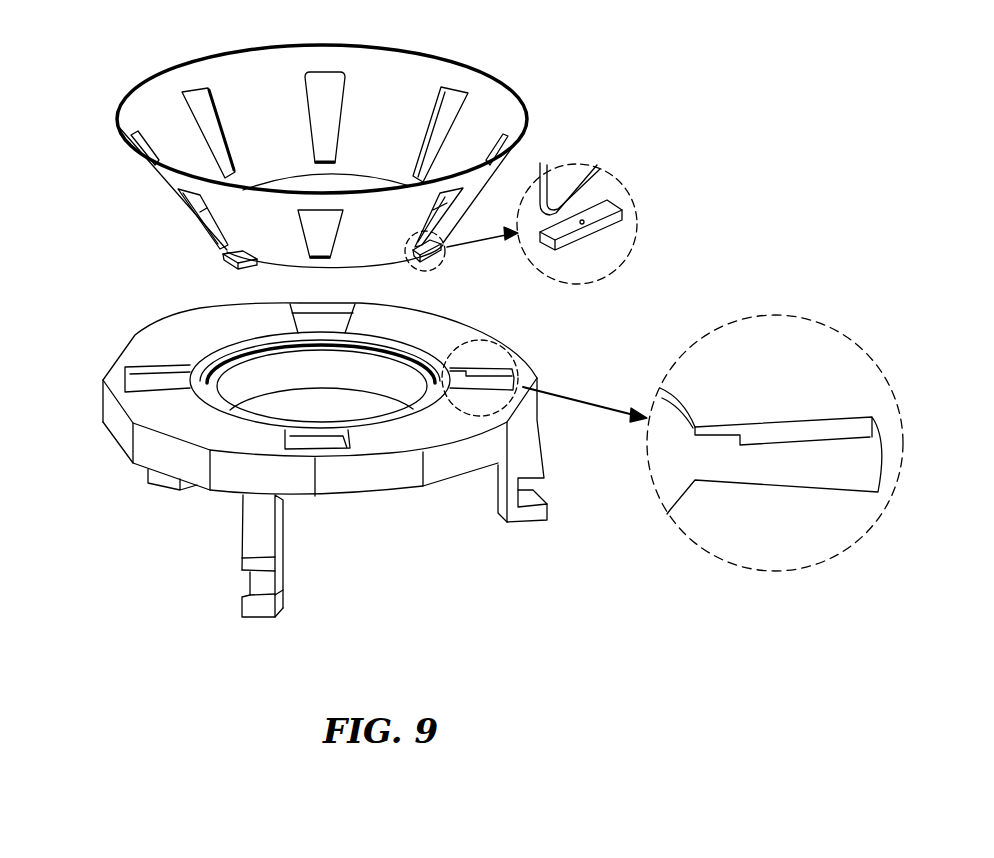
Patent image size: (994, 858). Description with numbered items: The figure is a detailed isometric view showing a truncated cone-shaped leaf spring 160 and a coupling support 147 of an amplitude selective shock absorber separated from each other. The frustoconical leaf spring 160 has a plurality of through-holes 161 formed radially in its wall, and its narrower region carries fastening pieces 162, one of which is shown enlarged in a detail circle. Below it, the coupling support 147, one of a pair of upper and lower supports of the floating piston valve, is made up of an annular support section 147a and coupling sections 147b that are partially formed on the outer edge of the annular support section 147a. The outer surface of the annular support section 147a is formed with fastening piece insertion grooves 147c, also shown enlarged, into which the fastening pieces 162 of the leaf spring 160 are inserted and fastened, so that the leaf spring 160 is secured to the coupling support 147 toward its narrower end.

The truncated cone-shaped leaf spring 160 is at (404, 148).
The through-hole 161 is at (326, 78).
The fastening piece 162 is at (602, 225).
The coupling support 147 is at (460, 460).
The annular support section 147a is at (108, 407).
The coupling section 147b is at (283, 548).
The fastening piece insertion groove 147c is at (723, 444).